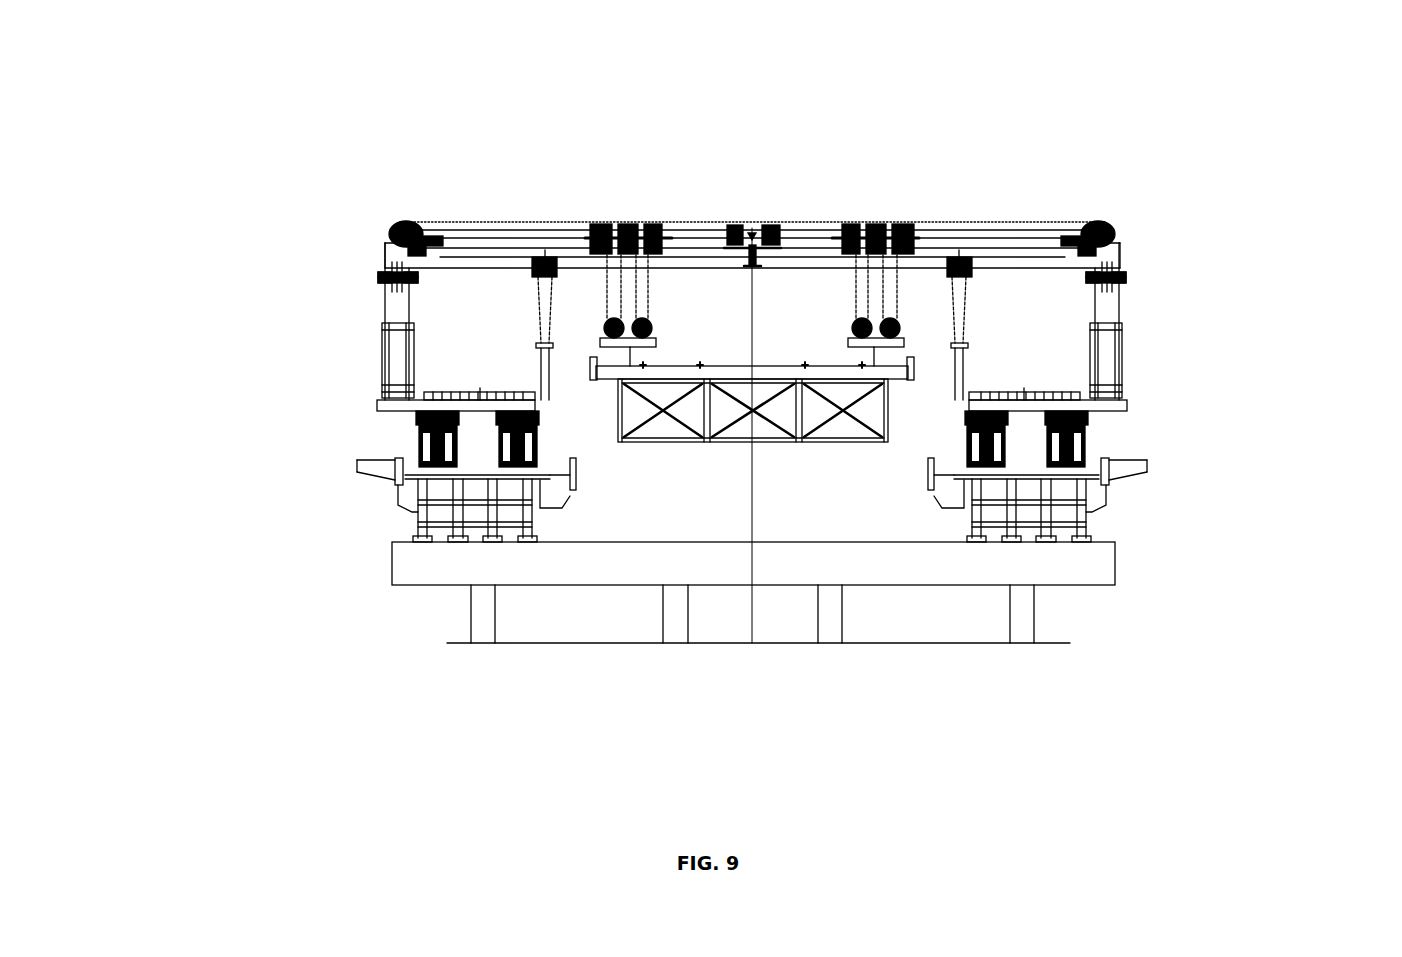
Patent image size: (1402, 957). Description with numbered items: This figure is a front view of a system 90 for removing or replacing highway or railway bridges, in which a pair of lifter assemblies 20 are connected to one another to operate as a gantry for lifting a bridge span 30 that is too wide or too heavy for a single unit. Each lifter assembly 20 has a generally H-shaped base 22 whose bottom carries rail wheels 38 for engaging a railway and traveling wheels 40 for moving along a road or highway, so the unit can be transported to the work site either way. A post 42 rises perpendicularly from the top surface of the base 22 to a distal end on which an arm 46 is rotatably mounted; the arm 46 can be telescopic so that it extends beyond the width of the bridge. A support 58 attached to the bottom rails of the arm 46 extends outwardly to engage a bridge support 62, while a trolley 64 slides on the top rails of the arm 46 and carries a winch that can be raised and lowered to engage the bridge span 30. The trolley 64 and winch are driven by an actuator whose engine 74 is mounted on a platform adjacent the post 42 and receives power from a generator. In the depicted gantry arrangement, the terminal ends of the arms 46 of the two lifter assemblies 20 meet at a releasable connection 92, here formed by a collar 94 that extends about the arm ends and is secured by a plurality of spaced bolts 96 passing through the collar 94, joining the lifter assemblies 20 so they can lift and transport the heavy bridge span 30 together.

The lifter assembly 20 is at (779, 225).
The base 22 is at (637, 609).
The bridge span 30 is at (752, 244).
The rail wheels 38 is at (752, 644).
The traveling wheels 40 is at (666, 621).
The post 42 is at (783, 167).
The arm 46 is at (752, 157).
The support 58 is at (756, 223).
The bridge support 62 is at (782, 686).
The trolley 64 is at (749, 206).
The engine 74 is at (593, 577).
The system 90 is at (1086, 192).
The releasable connection 92 is at (752, 228).
The collar 94 is at (757, 268).
The bolts 96 is at (747, 268).